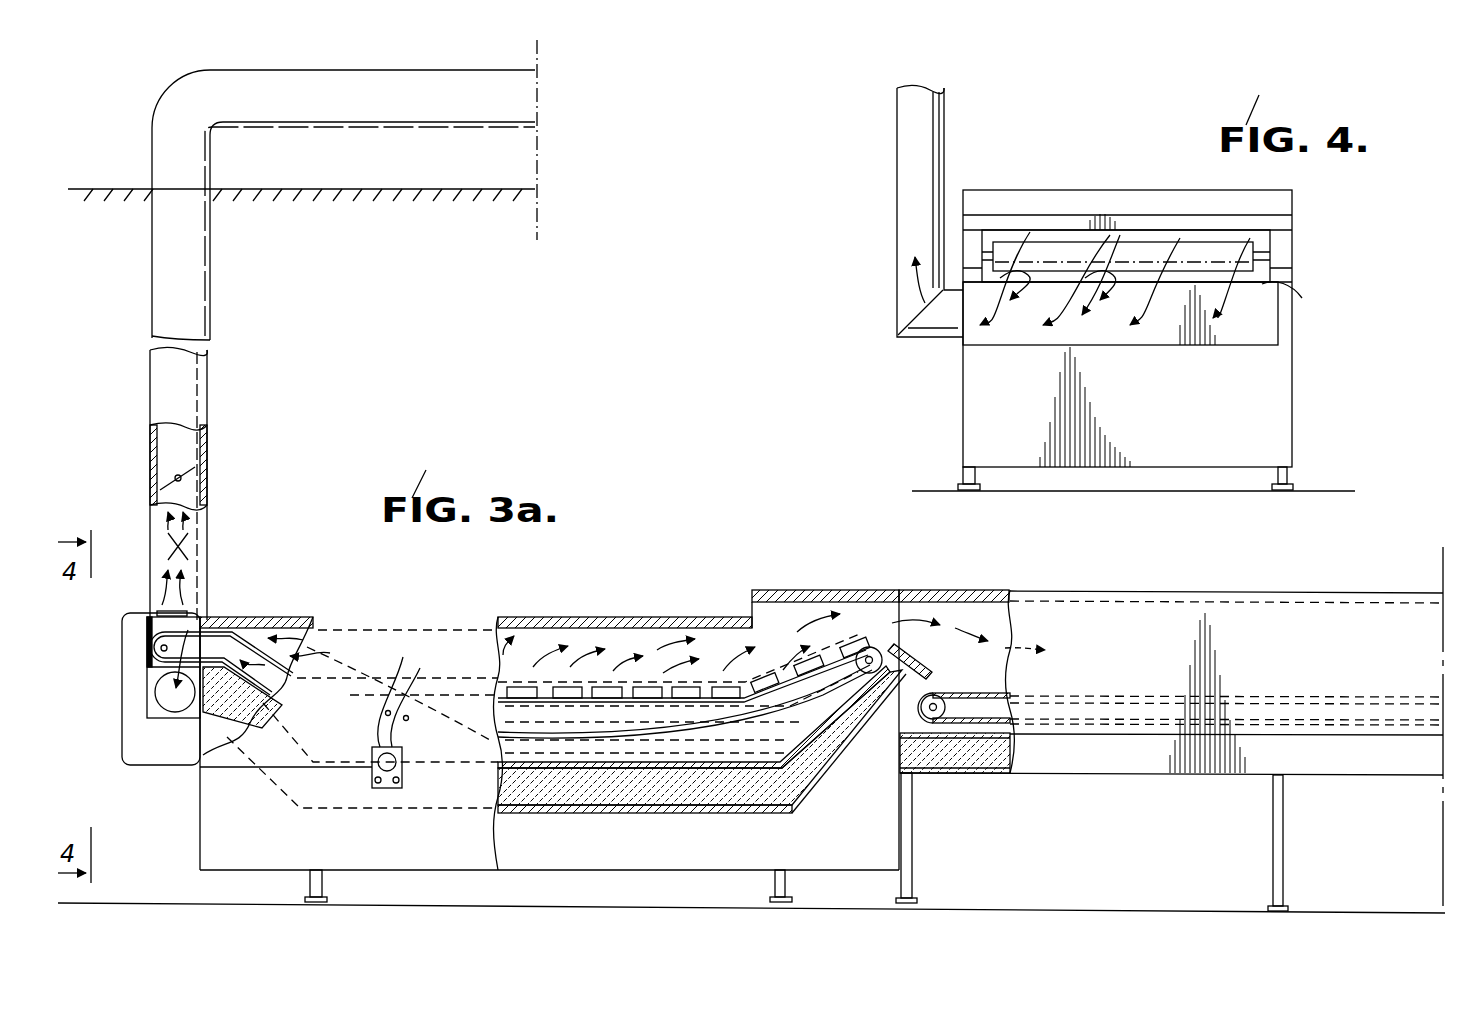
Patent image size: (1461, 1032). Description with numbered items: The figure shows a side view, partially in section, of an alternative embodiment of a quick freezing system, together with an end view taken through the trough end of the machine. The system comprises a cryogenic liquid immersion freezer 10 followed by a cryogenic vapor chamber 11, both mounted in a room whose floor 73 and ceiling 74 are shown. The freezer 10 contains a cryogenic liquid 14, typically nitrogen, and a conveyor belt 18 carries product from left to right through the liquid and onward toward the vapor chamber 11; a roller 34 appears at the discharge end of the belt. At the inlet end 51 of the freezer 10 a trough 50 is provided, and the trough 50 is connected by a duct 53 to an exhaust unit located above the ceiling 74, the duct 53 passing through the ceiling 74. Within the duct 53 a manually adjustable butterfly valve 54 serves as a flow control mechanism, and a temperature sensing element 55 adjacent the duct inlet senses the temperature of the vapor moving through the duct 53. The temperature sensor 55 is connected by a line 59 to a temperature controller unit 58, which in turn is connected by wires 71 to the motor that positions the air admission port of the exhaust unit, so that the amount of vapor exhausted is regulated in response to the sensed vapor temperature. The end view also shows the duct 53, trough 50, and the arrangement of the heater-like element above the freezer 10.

In FIG. 3a, the cryogenic liquid immersion freezer 10 is at (610, 852).
In FIG. 4, the cryogenic liquid immersion freezer 10 is at (1143, 460).
In FIG. 3a, the cryogenic vapor chamber 11 is at (1185, 780).
In FIG. 3a, the cryogenic liquid 14 is at (685, 709).
In FIG. 3a, the conveyor belt 18 is at (566, 694).
In FIG. 4, the conveyor belt 18 is at (1125, 255).
In FIG. 3a, the discharge roller 34 is at (985, 690).
In FIG. 3a, the trough 50 is at (143, 672).
In FIG. 4, the trough 50 is at (990, 345).
In FIG. 3a, the inlet end 51 is at (138, 697).
In FIG. 3a, the duct 53 is at (207, 368).
In FIG. 4, the duct 53 is at (908, 157).
In FIG. 3a, the butterfly valve 54 is at (197, 481).
In FIG. 3a, the temperature sensing element 55 is at (173, 610).
In FIG. 3a, the temperature controller unit 58 is at (385, 790).
In FIG. 3a, the line 59 is at (152, 767).
In FIG. 3a, the wires 71 is at (377, 743).
In FIG. 3a, the floor 73 is at (970, 903).
In FIG. 3a, the ceiling 74 is at (341, 189).